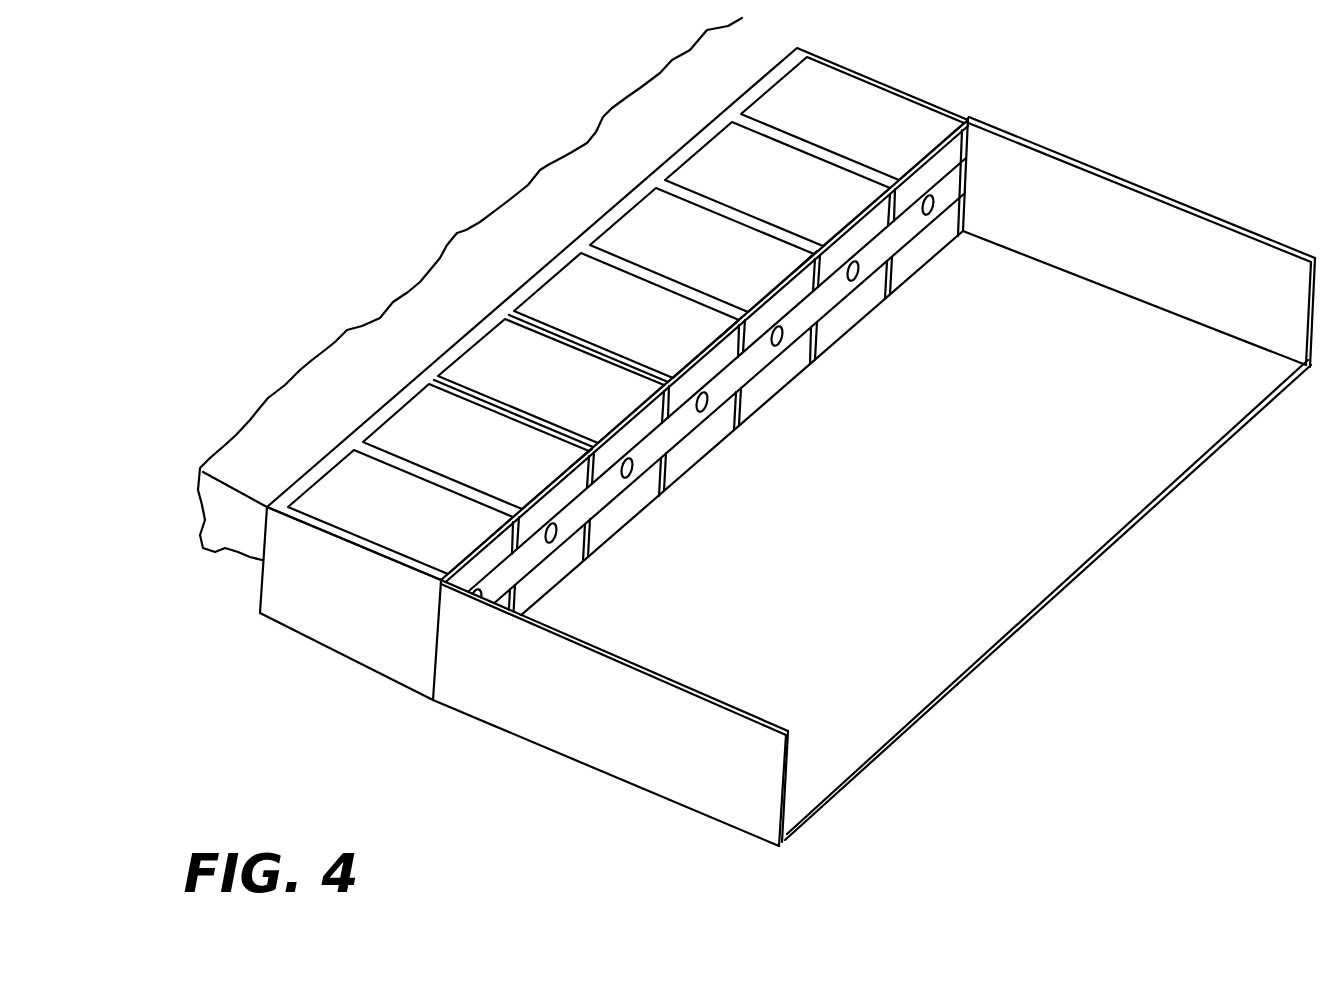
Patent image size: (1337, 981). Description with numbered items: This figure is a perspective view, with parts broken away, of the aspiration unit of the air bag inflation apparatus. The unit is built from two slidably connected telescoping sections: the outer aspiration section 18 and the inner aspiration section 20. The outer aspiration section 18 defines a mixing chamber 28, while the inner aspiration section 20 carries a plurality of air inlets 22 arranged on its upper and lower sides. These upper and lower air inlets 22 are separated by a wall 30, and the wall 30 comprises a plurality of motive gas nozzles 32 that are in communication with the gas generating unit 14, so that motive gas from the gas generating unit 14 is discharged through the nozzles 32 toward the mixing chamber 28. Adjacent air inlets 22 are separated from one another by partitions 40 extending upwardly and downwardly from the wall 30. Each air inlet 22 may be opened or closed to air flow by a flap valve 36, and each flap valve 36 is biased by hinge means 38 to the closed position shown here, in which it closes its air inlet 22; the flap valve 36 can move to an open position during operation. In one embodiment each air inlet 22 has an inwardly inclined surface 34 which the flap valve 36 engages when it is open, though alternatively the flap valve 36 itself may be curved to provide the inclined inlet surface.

The gas generating unit 14 is at (512, 215).
The outer aspiration section 18 is at (1133, 215).
The inner aspiration section 20 is at (357, 610).
The air inlets 22 is at (773, 78).
The mixing chamber 28 is at (926, 519).
The wall 30 is at (530, 557).
The motive gas nozzles 32 is at (640, 492).
The inwardly inclined surface 34 is at (558, 492).
The flap valve 36 is at (391, 514).
The hinge means 38 is at (563, 262).
The partitions 40 is at (563, 414).